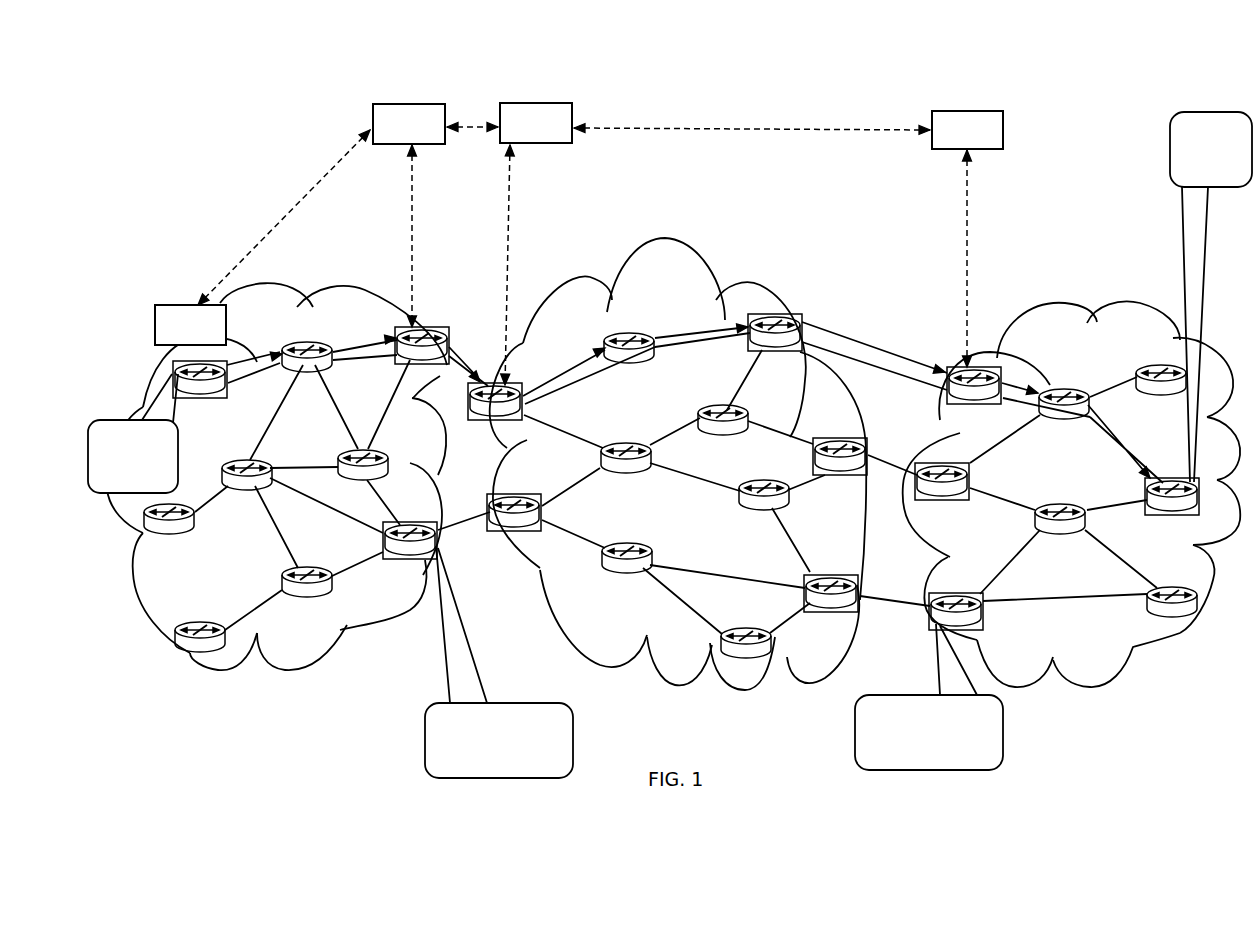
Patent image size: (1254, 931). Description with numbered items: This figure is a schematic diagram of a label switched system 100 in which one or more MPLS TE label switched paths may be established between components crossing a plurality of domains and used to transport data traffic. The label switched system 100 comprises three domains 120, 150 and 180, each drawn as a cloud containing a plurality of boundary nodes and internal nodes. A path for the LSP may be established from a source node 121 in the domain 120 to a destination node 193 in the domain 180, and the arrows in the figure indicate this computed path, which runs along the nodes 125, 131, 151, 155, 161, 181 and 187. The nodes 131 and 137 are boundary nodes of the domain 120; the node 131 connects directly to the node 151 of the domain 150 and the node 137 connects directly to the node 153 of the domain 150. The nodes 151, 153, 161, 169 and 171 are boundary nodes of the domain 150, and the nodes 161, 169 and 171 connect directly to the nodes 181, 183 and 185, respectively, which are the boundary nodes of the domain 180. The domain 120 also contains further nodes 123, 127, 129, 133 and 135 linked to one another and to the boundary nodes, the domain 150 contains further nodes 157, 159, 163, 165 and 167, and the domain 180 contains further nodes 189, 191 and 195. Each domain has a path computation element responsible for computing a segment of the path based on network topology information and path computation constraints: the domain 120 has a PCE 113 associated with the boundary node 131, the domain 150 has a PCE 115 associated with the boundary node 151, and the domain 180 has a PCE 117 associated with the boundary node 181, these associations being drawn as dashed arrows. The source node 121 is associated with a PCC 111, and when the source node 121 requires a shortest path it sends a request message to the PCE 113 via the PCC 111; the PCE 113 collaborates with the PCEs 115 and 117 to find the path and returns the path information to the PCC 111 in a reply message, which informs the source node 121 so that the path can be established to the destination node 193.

The label switched system 100 is at (200, 85).
The PCC 111 is at (160, 305).
The PCE 113 is at (405, 104).
The PCE 115 is at (548, 103).
The PCE 117 is at (962, 111).
The domain 120 is at (293, 280).
The domain 150 is at (668, 237).
The domain 180 is at (1067, 298).
The source node 121 is at (200, 389).
The node 123 is at (171, 529).
The node 125 is at (307, 343).
The node 127 is at (247, 459).
The node 129 is at (184, 622).
The boundary node 131 is at (422, 354).
The node 133 is at (363, 452).
The node 135 is at (307, 591).
The boundary node 137 is at (410, 550).
The boundary node 151 is at (500, 410).
The boundary node 153 is at (517, 522).
The node 155 is at (629, 358).
The node 157 is at (627, 468).
The node 159 is at (627, 567).
The boundary node 161 is at (775, 344).
The node 163 is at (723, 430).
The node 165 is at (764, 506).
The node 167 is at (746, 654).
The boundary node 169 is at (841, 446).
The boundary node 171 is at (831, 603).
The boundary node 181 is at (974, 395).
The boundary node 183 is at (939, 491).
The boundary node 185 is at (956, 599).
The node 187 is at (1064, 414).
The node 189 is at (1060, 507).
The node 191 is at (1161, 367).
The destination node 193 is at (1172, 480).
The node 195 is at (1172, 611).